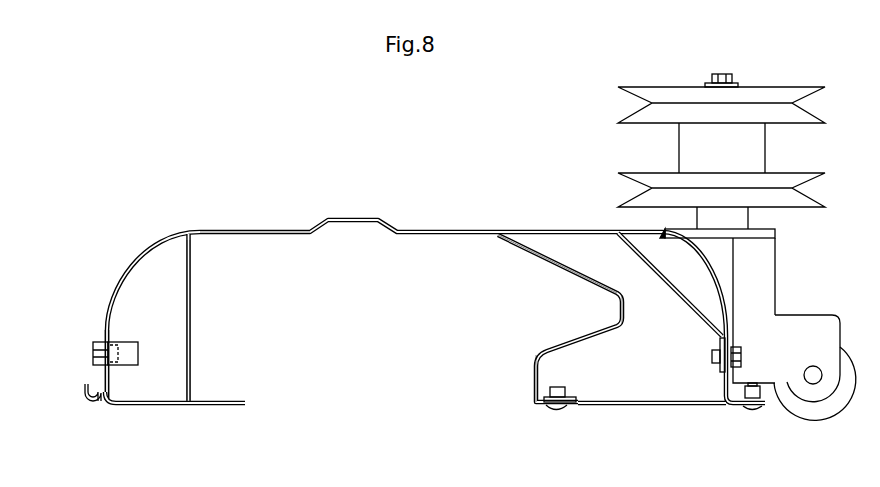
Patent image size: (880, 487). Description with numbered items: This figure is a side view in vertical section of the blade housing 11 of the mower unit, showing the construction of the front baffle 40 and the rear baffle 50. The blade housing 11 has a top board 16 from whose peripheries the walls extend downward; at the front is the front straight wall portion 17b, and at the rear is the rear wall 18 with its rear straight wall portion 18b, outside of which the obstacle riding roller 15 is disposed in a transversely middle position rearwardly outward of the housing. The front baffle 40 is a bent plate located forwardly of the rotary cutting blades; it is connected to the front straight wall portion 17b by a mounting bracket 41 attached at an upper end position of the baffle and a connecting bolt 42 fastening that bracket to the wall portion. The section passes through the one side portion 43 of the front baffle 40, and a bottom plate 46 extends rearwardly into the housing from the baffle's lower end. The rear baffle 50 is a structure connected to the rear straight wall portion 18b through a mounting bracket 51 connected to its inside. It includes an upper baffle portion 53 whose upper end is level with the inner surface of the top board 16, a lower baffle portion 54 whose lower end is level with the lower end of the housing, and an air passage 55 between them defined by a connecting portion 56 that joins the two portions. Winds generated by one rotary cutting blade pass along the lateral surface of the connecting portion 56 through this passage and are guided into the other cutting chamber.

The blade housing 11 is at (355, 214).
The obstacle riding roller 15 is at (838, 407).
The top board 16 is at (215, 227).
The front straight wall portion 17b is at (105, 328).
The rear wall 18 is at (750, 304).
The rear straight wall portion 18b is at (733, 337).
The front baffle 40 is at (195, 332).
The mounting bracket 41 is at (130, 360).
The connecting bolt 42 is at (93, 348).
The one side portion 43 is at (190, 285).
The bottom plate 46 is at (208, 405).
The rear baffle 50 is at (530, 390).
The mounting bracket 51 is at (723, 386).
The upper baffle portion 53 is at (513, 237).
The lower baffle portion 54 is at (533, 376).
The air passage 55 is at (525, 318).
The connecting portion 56 is at (622, 305).